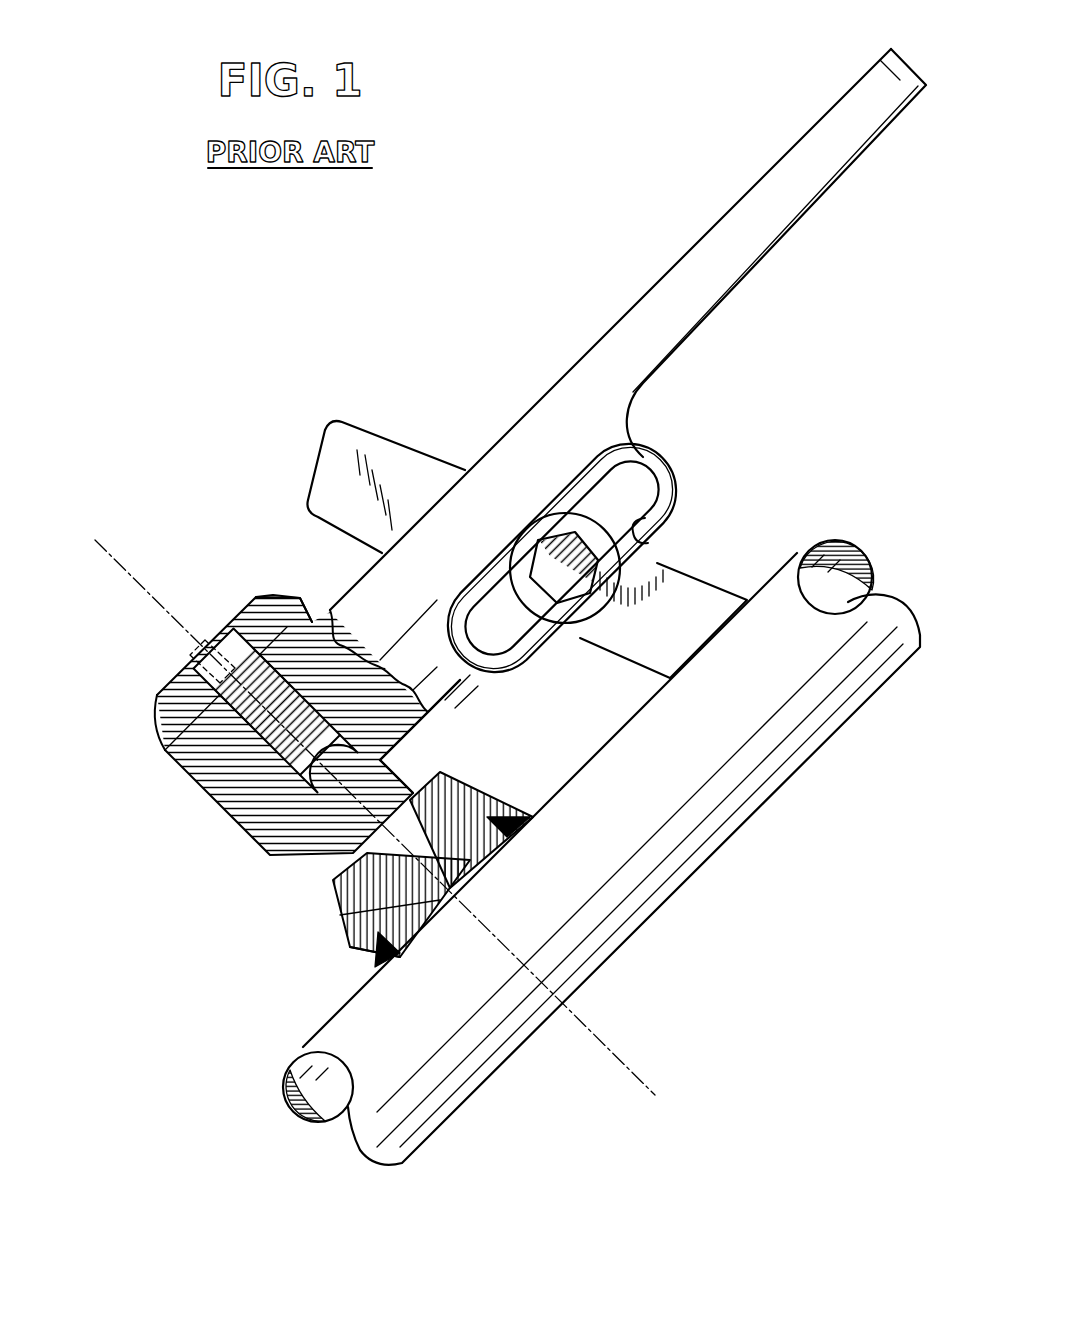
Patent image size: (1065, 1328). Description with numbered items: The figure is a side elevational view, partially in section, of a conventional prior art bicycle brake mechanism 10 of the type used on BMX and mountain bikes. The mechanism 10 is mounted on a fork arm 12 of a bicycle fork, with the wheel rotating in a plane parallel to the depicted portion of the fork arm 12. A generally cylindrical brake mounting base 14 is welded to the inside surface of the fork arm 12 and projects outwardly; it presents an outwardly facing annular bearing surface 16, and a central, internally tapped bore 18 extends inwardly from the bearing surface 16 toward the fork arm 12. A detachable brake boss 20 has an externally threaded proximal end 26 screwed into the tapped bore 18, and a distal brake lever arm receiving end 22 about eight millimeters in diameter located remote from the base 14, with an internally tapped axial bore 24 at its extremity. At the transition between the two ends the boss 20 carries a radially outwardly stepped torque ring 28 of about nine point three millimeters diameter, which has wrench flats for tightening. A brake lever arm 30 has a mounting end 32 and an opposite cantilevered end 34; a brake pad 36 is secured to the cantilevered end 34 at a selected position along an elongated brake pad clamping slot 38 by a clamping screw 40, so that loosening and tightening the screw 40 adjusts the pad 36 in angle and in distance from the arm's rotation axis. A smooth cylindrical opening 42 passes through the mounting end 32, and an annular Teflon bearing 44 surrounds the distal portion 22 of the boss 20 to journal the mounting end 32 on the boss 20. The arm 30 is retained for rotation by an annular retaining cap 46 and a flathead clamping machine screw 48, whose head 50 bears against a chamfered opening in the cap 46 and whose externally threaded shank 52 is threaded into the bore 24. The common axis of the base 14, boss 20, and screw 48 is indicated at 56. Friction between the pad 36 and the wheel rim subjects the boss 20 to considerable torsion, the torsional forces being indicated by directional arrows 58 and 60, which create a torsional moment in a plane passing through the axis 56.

The bicycle brake mechanism 10 is at (150, 782).
The fork arm 12 is at (780, 726).
The brake mounting base 14 is at (330, 902).
The bearing surface 16 is at (332, 870).
The internally tapped bore 18 is at (435, 820).
The brake boss 20 is at (403, 760).
The brake lever arm receiving end 22 is at (242, 760).
The axial bore 24 is at (215, 752).
The proximal end 26 is at (414, 890).
The torque ring 28 is at (327, 840).
The brake lever arm 30 is at (551, 431).
The mounting end 32 is at (326, 626).
The cantilevered end 34 is at (836, 104).
The brake pad 36 is at (688, 594).
The brake pad clamping slot 38 is at (637, 542).
The clamping screw 40 is at (605, 512).
The cylindrical opening 42 is at (297, 805).
The Teflon bearing 44 is at (334, 655).
The retaining cap 46 is at (157, 695).
The clamping machine screw 48 is at (213, 636).
The head 50 is at (196, 680).
The externally threaded shank 52 is at (262, 787).
The axis 56 is at (100, 540).
The directional arrow 58 is at (742, 77).
The directional arrow 60 is at (905, 218).